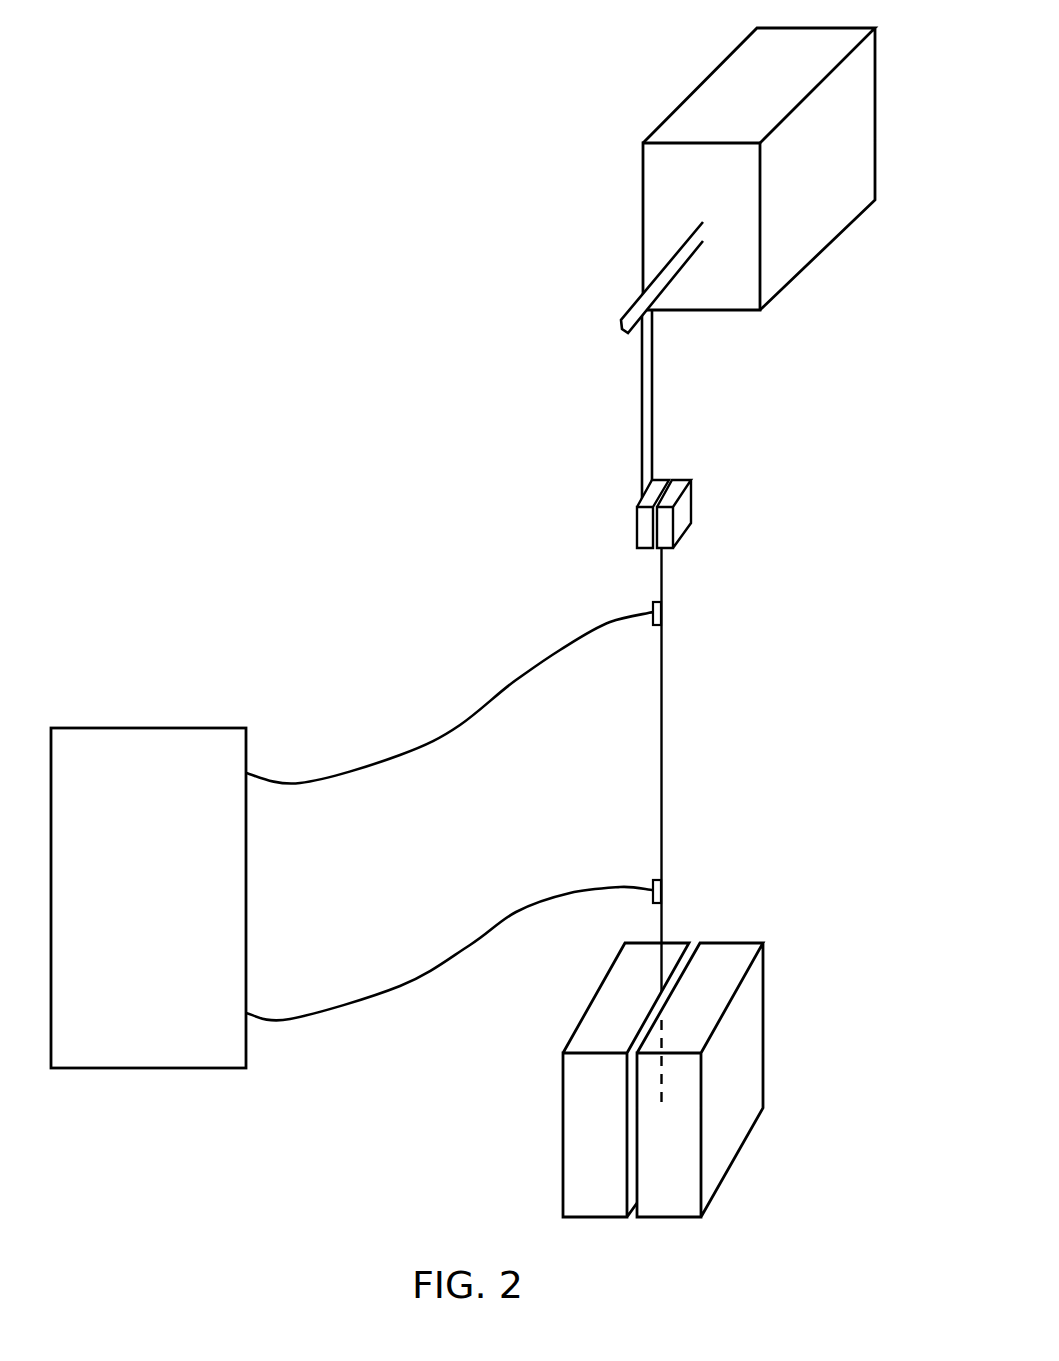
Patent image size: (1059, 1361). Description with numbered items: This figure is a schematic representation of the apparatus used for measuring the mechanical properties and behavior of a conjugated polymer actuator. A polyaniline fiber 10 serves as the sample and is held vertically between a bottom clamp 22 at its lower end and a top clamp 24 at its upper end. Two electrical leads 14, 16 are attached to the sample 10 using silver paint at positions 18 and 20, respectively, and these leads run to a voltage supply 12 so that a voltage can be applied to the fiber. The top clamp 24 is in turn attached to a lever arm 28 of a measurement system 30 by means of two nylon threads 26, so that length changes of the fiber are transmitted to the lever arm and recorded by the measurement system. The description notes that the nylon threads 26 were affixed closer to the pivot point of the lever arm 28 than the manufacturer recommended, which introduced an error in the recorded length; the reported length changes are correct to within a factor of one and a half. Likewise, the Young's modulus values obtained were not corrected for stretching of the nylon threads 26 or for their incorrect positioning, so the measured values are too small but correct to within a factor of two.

The polyaniline fiber 10 is at (663, 832).
The voltage supply 12 is at (148, 898).
The electrical lead 14 is at (473, 708).
The electrical lead 16 is at (447, 955).
The attachment position 18 is at (652, 602).
The attachment position 20 is at (652, 880).
The bottom clamp 22 is at (765, 1020).
The top clamp 24 is at (692, 507).
The nylon threads 26 is at (650, 408).
The lever arm 28 is at (625, 308).
The measurement system 30 is at (642, 201).